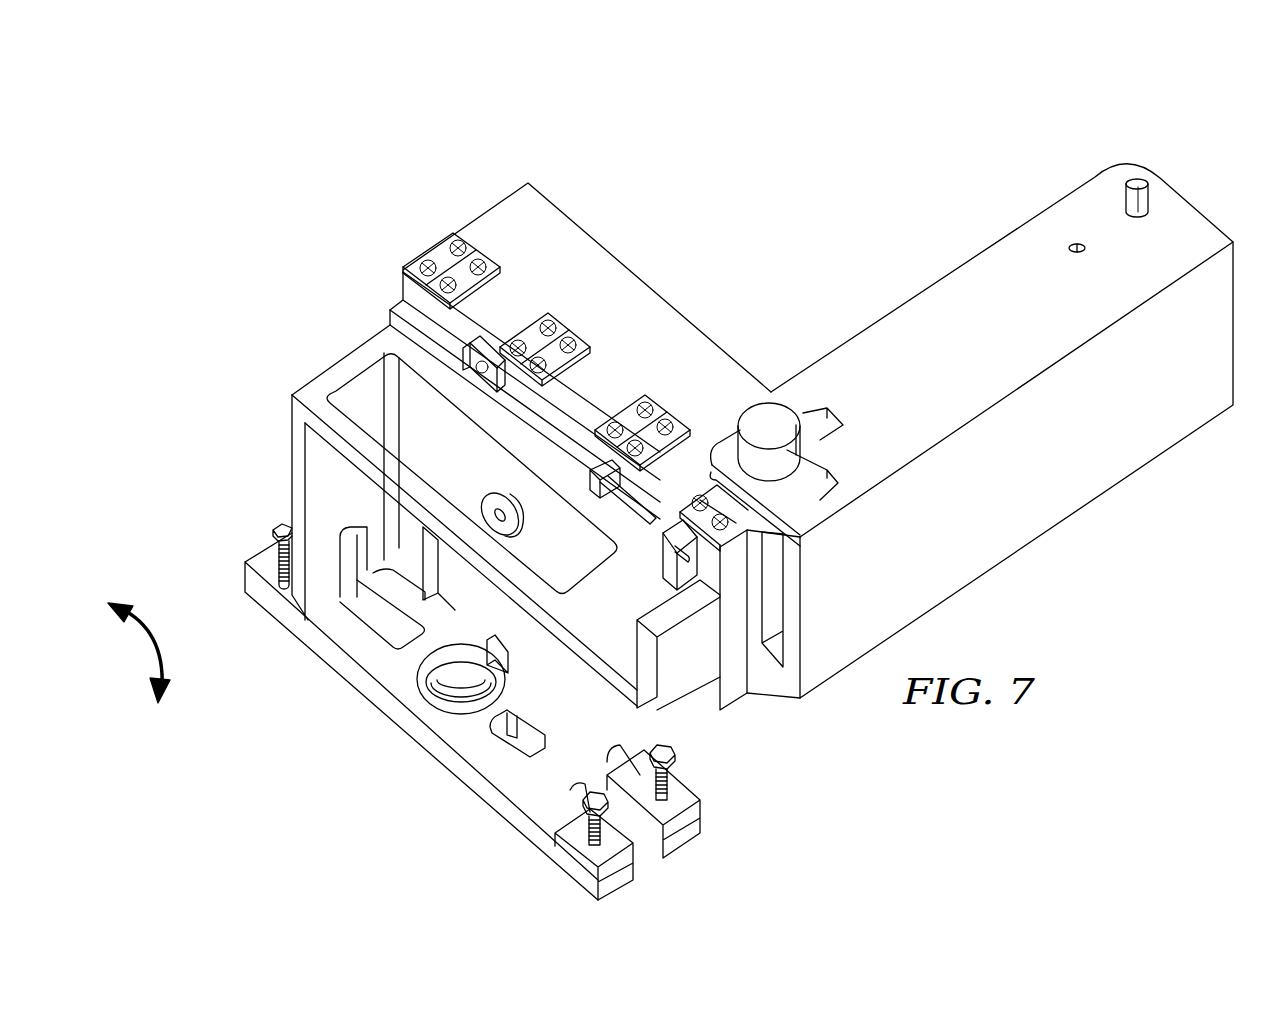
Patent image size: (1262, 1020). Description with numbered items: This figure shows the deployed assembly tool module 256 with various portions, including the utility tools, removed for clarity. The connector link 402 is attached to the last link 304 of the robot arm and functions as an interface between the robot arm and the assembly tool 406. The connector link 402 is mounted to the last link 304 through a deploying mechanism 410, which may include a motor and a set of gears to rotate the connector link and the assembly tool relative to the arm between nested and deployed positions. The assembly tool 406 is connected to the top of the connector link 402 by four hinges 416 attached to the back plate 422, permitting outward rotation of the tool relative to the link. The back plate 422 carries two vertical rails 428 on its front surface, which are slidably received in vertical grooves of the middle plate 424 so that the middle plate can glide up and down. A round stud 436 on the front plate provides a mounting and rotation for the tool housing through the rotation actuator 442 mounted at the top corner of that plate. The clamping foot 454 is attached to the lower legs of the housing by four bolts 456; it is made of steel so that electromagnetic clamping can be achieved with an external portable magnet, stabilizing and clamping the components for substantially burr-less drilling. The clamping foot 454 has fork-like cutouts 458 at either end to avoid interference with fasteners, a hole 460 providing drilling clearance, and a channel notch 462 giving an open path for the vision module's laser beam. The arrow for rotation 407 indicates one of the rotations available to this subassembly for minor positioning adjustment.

The assembly tool module 256 is at (913, 96).
The last link 304 is at (1188, 199).
The connector link 402 is at (470, 223).
The assembly tool 406 is at (336, 359).
The rotation 407 is at (158, 648).
The deploying mechanism 410 is at (780, 410).
The hinges 416 is at (568, 330).
The back plate 422 is at (733, 697).
The middle plate 424 is at (398, 307).
The vertical rails 428 is at (487, 343).
The round stud 436 is at (490, 493).
The rotation actuator 442 is at (633, 517).
The clamping foot 454 is at (328, 667).
The bolts 456 is at (280, 530).
The fork-like cutouts 458 is at (647, 867).
The hole 460 is at (460, 703).
The channel notch 462 is at (505, 668).